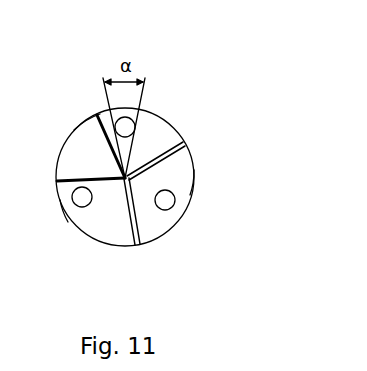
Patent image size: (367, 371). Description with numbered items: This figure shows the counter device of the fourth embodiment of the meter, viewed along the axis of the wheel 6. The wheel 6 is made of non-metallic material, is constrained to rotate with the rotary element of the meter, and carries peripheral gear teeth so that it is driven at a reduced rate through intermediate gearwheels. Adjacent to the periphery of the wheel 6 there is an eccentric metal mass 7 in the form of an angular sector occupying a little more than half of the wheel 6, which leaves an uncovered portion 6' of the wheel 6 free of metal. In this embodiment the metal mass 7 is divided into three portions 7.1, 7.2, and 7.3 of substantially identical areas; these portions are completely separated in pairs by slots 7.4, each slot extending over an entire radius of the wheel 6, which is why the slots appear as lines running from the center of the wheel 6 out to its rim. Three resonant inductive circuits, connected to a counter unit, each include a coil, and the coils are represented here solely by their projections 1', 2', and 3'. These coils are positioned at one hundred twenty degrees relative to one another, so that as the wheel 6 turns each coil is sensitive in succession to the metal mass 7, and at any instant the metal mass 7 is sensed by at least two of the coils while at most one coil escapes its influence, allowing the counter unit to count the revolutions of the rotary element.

The projection of the first coil 1' is at (168, 116).
The projection of the second coil 2' is at (198, 223).
The projection of the third coil 3' is at (76, 233).
The wheel 6 is at (99, 177).
The uncovered portion of the wheel 6' is at (62, 115).
The metal mass 7 is at (121, 229).
The first portion of the metal mass 7.1 is at (150, 112).
The second portion of the metal mass 7.2 is at (184, 180).
The third portion of the metal mass 7.3 is at (65, 212).
The slots 7.4 is at (186, 148).